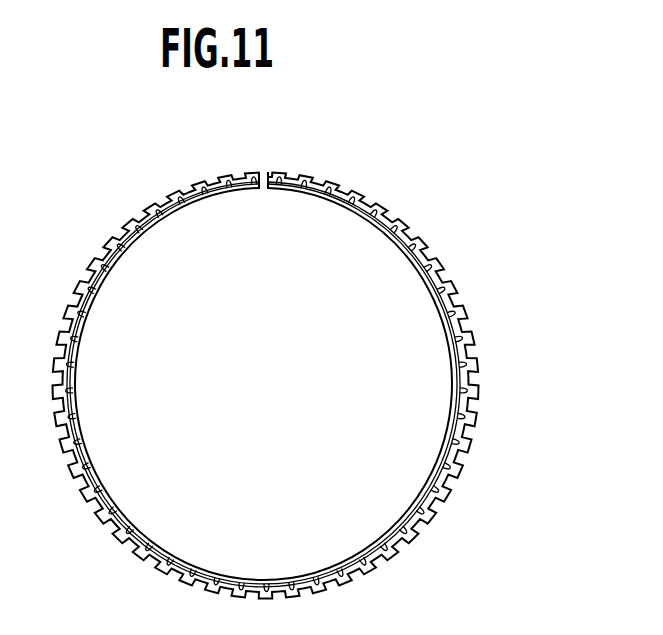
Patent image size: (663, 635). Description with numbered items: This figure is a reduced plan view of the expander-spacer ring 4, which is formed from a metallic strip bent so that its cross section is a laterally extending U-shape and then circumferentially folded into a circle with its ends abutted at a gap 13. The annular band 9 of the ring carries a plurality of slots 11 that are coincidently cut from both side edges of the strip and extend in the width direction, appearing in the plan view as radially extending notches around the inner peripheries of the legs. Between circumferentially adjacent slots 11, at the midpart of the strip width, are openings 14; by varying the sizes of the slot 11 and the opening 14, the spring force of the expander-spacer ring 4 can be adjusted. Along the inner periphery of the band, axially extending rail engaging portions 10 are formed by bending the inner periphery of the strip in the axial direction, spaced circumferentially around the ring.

The expander-spacer ring 4 is at (282, 355).
The annular band 9 is at (266, 355).
The rail engaging portion 10 is at (222, 193).
The slot 11 is at (302, 189).
The gap 13 is at (264, 168).
The opening 14 is at (217, 177).